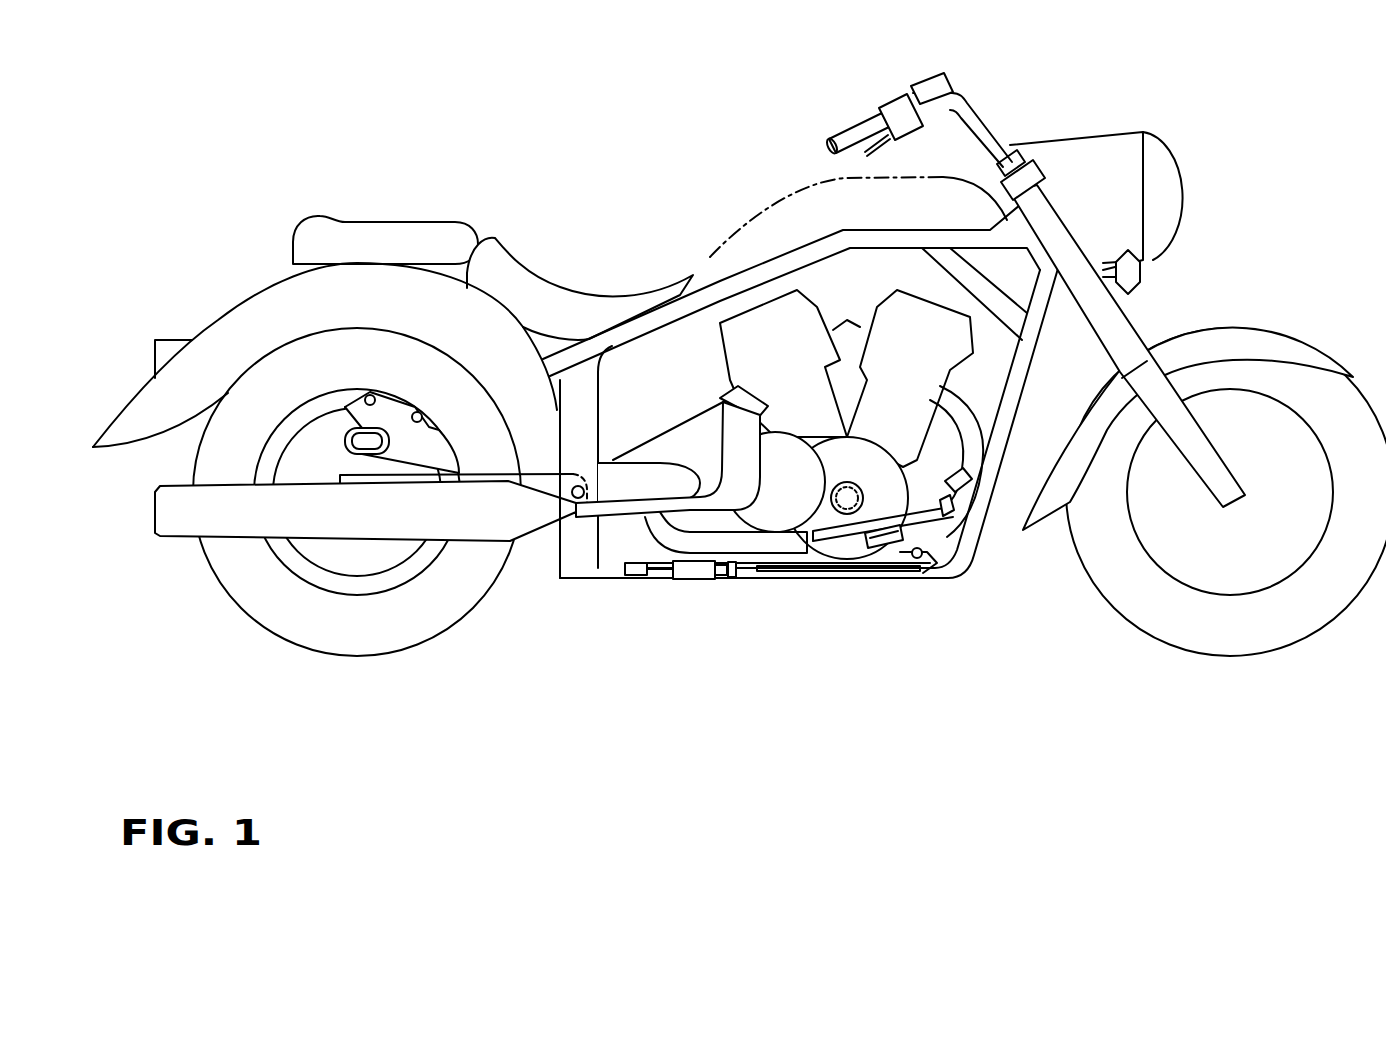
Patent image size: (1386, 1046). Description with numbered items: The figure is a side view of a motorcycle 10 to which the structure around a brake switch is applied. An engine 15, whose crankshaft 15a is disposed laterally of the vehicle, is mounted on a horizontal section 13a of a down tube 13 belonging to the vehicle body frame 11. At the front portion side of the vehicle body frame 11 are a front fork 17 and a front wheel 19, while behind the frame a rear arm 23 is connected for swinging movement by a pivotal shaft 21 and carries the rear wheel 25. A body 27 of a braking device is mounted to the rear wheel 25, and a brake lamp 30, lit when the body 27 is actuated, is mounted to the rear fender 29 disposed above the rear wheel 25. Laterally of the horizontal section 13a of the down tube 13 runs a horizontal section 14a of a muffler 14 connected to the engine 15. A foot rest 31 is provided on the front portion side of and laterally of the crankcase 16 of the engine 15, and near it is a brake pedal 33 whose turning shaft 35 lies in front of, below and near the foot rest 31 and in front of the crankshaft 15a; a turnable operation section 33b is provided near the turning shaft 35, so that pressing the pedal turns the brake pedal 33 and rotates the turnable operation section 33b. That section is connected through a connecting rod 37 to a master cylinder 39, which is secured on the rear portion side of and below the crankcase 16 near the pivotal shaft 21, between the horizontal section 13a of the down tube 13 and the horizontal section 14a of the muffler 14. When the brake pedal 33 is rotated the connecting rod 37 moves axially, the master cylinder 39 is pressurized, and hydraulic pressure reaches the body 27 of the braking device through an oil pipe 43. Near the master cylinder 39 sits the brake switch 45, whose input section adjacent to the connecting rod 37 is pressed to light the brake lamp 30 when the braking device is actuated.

The motorcycle 10 is at (608, 210).
The vehicle body frame 11 is at (803, 247).
The down tube 13 is at (990, 507).
The horizontal section 13a is at (613, 583).
The muffler 14 is at (530, 474).
The horizontal section 14a is at (773, 543).
The engine 15 is at (785, 328).
The crankshaft 15a is at (862, 483).
The crankcase 16 is at (823, 425).
The front fork 17 is at (1172, 400).
The front wheel 19 is at (1237, 657).
The pivotal shaft 21 is at (578, 500).
The rear arm 23 is at (477, 513).
The rear wheel 25 is at (362, 657).
The body of braking device 27 is at (394, 395).
The rear fender 29 is at (257, 290).
The brake lamp 30 is at (177, 340).
The foot rest 31 is at (848, 545).
The brake pedal 33 is at (983, 507).
The turnable operation section 33b is at (929, 555).
The turning shaft 35 is at (898, 547).
The connecting rod 37 is at (810, 571).
The master cylinder 39 is at (693, 583).
The oil pipe 43 is at (643, 583).
The brake switch 45 is at (743, 577).